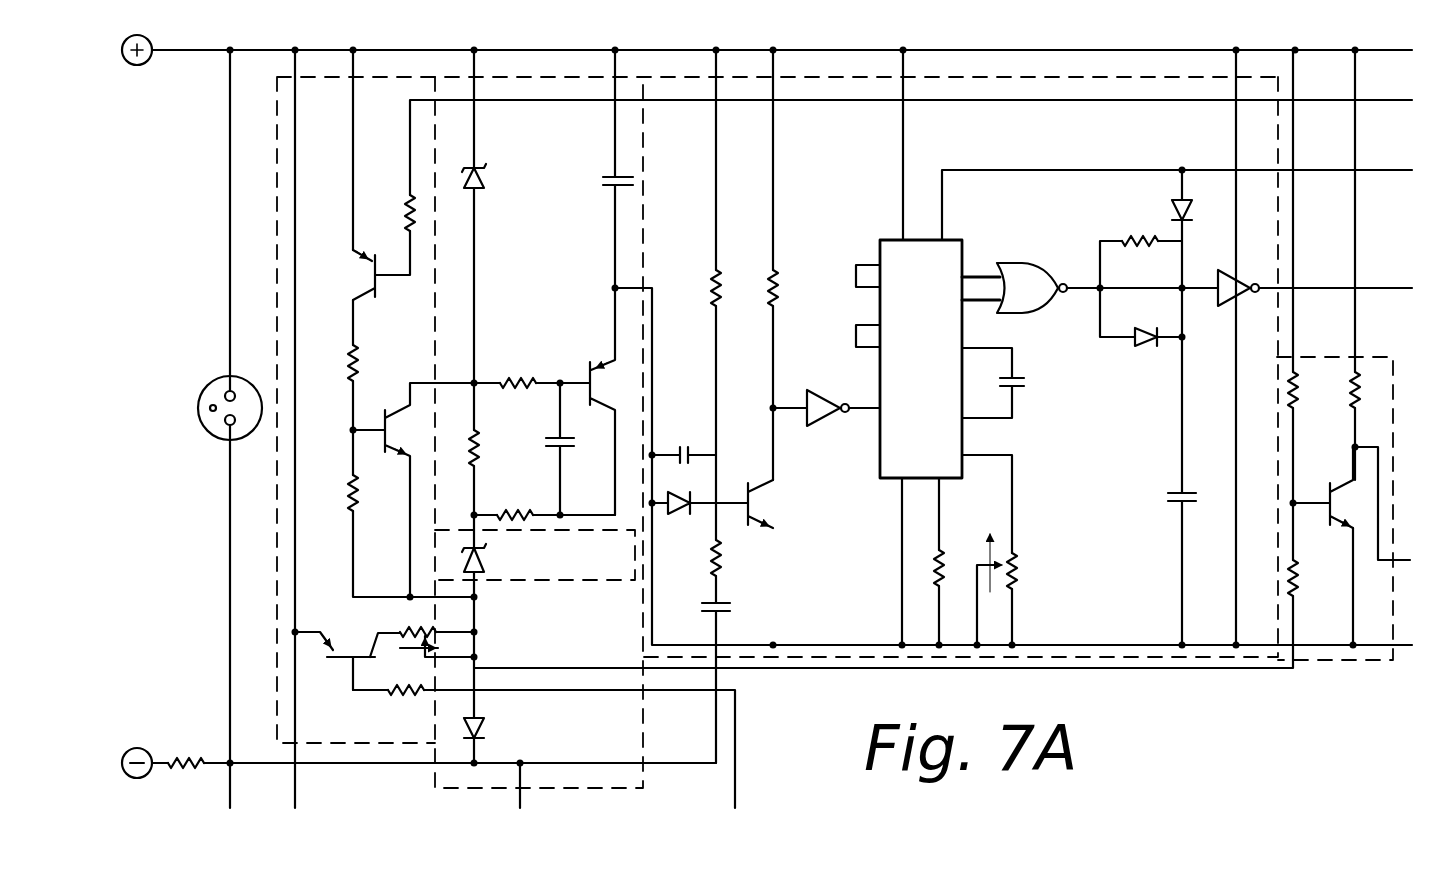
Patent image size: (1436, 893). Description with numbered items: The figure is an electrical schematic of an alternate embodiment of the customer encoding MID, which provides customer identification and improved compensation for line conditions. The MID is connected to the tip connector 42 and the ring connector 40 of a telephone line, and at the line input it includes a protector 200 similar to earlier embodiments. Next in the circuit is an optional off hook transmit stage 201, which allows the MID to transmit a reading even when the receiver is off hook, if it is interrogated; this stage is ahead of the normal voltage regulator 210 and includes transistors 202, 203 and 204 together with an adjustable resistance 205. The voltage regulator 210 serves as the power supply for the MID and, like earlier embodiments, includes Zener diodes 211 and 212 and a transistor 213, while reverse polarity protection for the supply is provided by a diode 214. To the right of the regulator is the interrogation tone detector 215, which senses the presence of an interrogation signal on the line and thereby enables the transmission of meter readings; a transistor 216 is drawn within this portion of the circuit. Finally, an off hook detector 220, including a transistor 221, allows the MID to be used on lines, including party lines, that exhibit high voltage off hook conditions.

The tip connector 42 is at (149, 60).
The ring connector 40 is at (133, 778).
The protector 200 is at (216, 380).
The off hook transmit stage 201 is at (277, 105).
The voltage regulator 210 is at (546, 85).
The interrogation tone detector 215 is at (843, 86).
The Zener diode 211 is at (484, 178).
The Zener diode 212 is at (486, 556).
The diode 214 is at (486, 727).
The transistor 202 is at (380, 280).
The transistor 203 is at (385, 410).
The transistor 213 is at (588, 370).
The transistor 216 is at (748, 495).
The transistor 221 is at (1330, 495).
The transistor 204 is at (368, 648).
The adjustable resistance 205 is at (428, 633).
The off hook detector 220 is at (1020, 575).